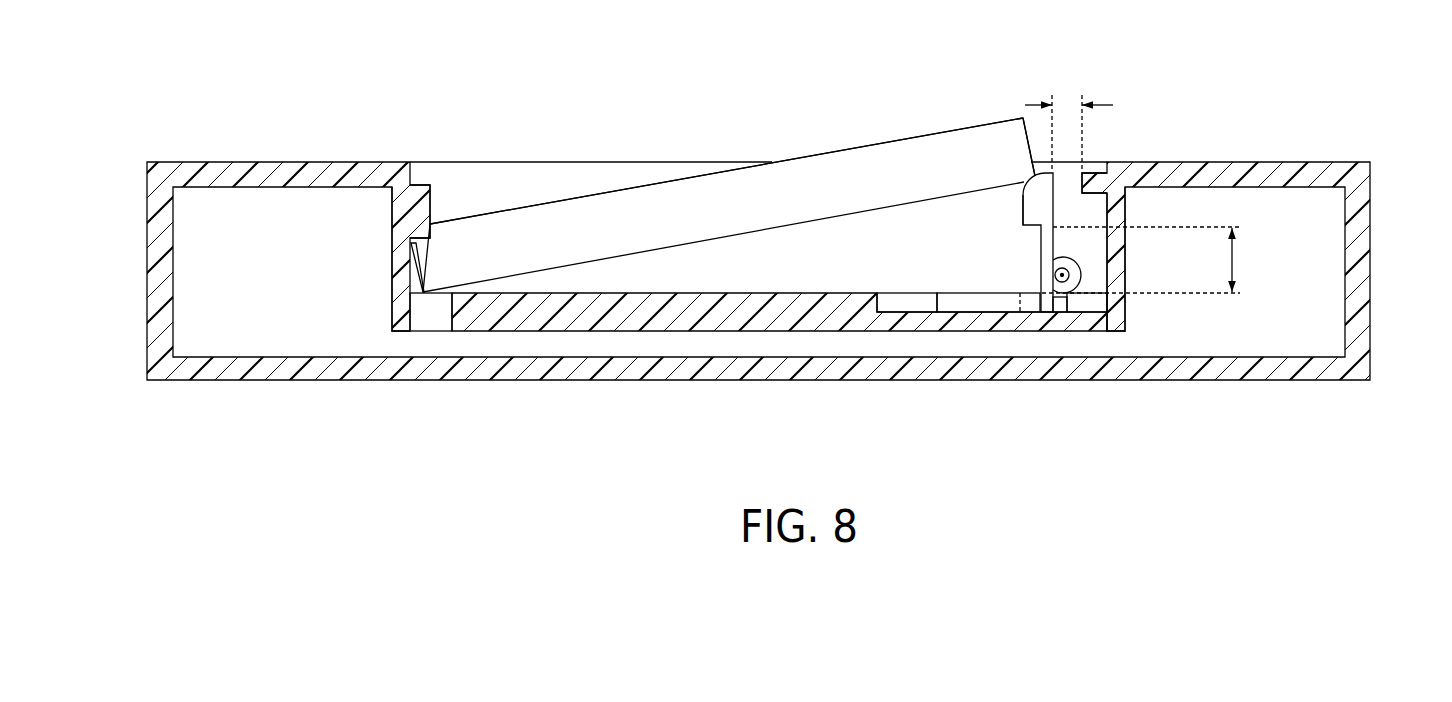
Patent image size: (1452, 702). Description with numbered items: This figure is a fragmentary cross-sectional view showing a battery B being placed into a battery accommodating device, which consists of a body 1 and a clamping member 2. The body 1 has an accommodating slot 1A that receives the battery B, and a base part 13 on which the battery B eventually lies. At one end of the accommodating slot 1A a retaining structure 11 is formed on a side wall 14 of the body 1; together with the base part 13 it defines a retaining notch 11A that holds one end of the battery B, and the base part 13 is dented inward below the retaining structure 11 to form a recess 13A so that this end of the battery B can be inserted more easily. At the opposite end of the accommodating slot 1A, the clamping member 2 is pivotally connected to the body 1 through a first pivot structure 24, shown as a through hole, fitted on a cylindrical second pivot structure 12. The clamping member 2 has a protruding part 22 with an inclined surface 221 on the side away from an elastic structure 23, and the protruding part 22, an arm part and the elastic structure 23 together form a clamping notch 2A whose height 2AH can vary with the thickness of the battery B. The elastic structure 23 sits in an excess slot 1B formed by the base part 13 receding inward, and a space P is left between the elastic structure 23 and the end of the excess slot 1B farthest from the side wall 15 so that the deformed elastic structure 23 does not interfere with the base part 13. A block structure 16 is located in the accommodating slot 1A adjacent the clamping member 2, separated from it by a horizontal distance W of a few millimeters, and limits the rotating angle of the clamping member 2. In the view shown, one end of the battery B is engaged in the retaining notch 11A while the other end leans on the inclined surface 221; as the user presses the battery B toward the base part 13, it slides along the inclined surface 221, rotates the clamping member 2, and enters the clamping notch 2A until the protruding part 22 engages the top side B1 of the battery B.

The body 1 is at (1364, 248).
The accommodating slot 1A is at (533, 194).
The excess slot 1B is at (1084, 301).
The clamping member 2 is at (1056, 305).
The clamping notch 2A is at (1030, 248).
The height of the clamping notch 2AH is at (1141, 260).
The retaining structure 11 is at (421, 208).
The retaining notch 11A is at (407, 259).
The second pivot structure 12 is at (1055, 275).
The base part 13 is at (666, 312).
The recess 13A is at (430, 310).
The side wall 14 is at (403, 283).
The side wall 15 is at (1117, 263).
The block structure 16 is at (1094, 182).
The protruding part 22 is at (1035, 205).
The elastic structure 23 is at (975, 302).
The first pivot structure 24 is at (1066, 257).
The inclined surface 221 is at (1030, 184).
The battery B is at (830, 158).
The top side of the battery B1 is at (628, 188).
The space P is at (902, 298).
The horizontal distance W is at (1069, 125).